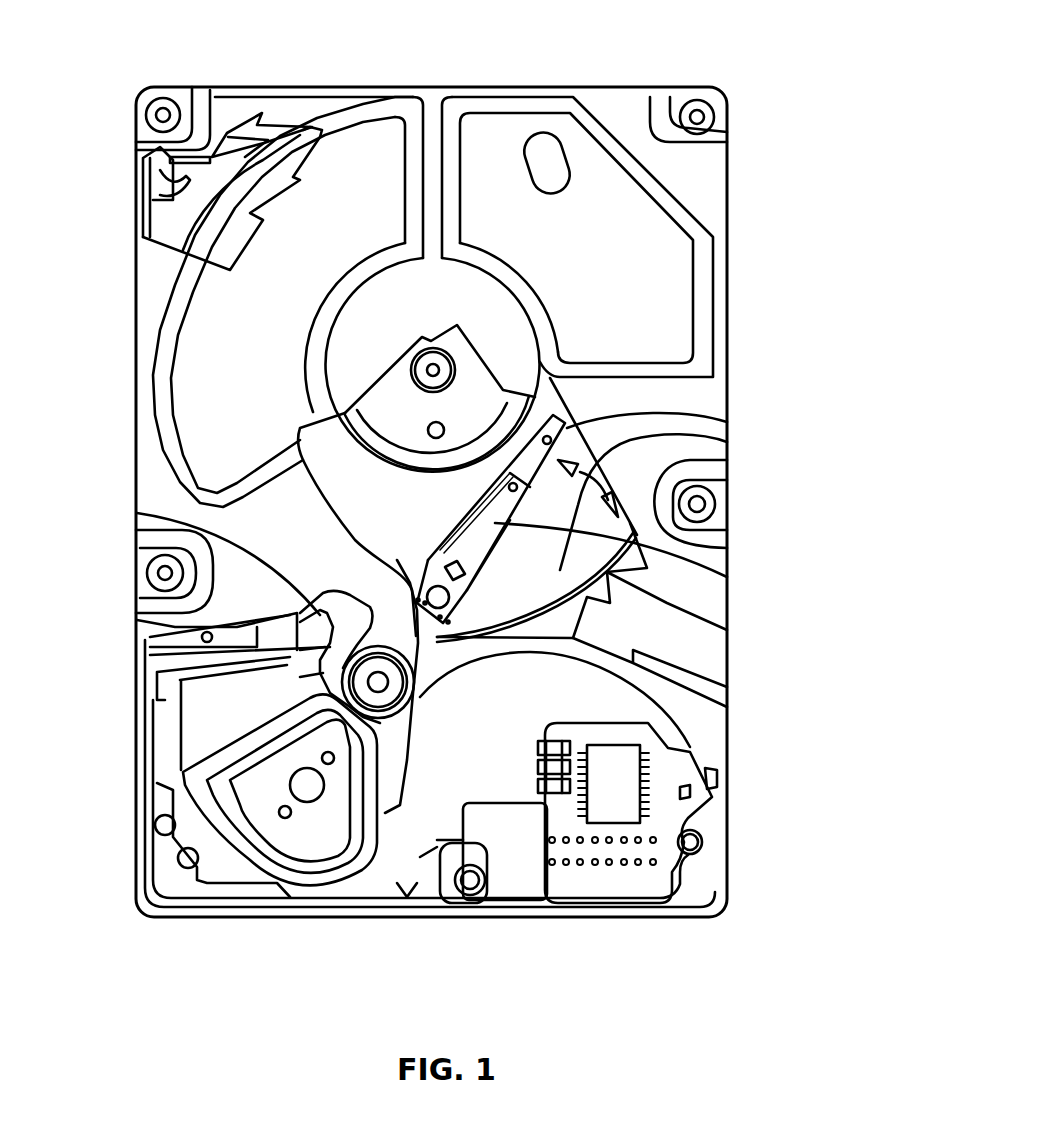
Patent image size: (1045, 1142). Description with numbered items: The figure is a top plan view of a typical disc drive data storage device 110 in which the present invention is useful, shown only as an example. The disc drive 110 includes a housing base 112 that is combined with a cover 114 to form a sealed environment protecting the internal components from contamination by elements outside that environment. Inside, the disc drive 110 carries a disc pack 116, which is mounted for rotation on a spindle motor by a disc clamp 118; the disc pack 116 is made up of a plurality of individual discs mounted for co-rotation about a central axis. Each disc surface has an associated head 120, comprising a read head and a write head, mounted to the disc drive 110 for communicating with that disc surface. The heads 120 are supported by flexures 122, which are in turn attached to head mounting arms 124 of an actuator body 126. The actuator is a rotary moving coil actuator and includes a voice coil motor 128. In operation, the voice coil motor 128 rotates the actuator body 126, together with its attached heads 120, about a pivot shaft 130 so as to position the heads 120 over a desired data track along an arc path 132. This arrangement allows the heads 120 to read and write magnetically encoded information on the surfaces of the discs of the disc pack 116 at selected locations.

The disc drive data storage device 110 is at (120, 458).
The housing base 112 is at (730, 842).
The cover 114 is at (433, 102).
The disc pack 116 is at (587, 563).
The disc clamp 118 is at (468, 388).
The head 120 is at (727, 422).
The flexure 122 is at (727, 577).
The head mounting arm 124 is at (727, 672).
The actuator body 126 is at (347, 637).
The voice coil motor 128 is at (280, 735).
The pivot shaft 130 is at (383, 685).
The arc path 132 is at (727, 442).